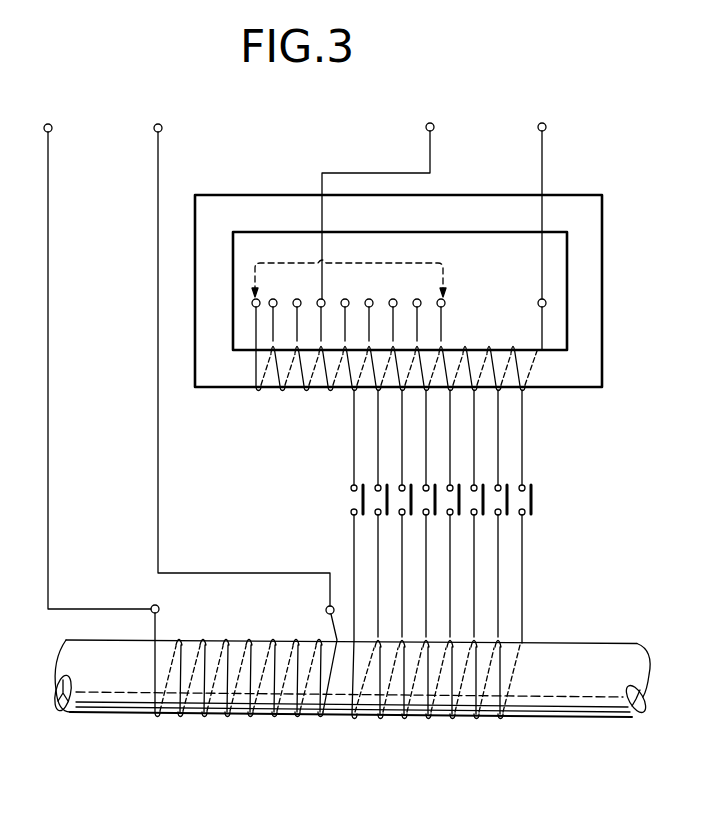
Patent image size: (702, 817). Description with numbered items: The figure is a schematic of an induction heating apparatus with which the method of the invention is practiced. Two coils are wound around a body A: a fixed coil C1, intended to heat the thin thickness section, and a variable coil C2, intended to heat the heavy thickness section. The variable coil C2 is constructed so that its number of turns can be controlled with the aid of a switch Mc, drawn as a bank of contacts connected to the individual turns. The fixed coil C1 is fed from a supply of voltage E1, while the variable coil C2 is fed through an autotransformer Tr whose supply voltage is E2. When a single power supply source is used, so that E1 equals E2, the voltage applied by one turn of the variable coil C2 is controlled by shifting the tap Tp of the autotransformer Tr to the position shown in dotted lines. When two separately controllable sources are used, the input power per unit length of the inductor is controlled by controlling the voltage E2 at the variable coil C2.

The power supply source voltage E1 is at (150, 128).
The power supply source voltage E2 is at (534, 127).
The tap Tp is at (313, 294).
The autotransformer Tr is at (592, 230).
The switch Mc is at (533, 497).
The workpiece A is at (73, 714).
The fixed coil C1 is at (204, 720).
The variable coil C2 is at (429, 721).